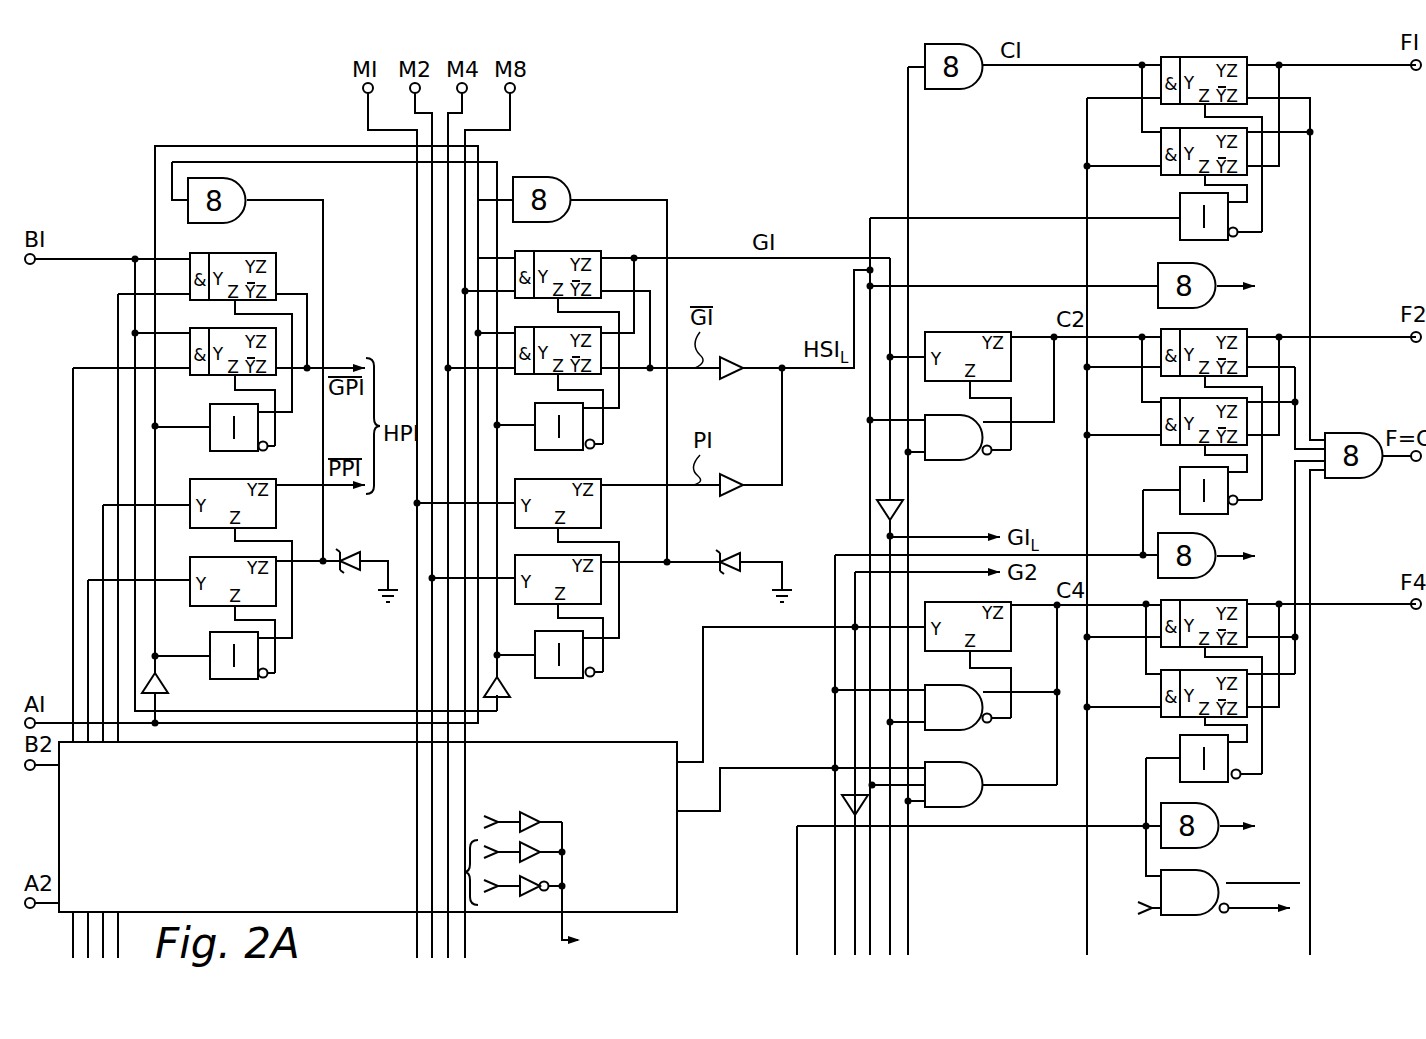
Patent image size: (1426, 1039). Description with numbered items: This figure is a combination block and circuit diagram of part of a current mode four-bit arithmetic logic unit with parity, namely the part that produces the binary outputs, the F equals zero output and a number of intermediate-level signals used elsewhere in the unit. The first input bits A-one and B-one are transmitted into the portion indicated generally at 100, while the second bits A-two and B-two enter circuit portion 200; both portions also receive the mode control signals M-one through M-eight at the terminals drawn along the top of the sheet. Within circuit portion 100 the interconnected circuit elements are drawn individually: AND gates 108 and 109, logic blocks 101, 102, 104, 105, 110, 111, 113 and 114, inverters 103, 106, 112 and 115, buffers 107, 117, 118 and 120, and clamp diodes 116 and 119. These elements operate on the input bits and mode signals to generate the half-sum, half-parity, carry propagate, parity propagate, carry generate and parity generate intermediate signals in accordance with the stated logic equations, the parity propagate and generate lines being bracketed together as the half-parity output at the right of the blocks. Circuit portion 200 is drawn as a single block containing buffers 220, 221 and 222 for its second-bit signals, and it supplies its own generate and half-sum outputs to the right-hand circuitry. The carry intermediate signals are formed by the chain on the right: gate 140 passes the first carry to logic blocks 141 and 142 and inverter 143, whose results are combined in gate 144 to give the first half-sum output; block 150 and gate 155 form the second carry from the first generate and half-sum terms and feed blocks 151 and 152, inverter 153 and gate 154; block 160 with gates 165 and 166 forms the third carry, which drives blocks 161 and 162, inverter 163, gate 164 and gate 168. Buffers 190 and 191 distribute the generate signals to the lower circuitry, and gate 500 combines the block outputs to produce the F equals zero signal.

The circuit portion 100 is at (180, 117).
The logic block 101 is at (205, 256).
The logic block 102 is at (208, 332).
The inverter 103 is at (212, 410).
The logic block 104 is at (210, 484).
The logic block 105 is at (210, 562).
The inverter 106 is at (212, 640).
The buffer 107 is at (162, 680).
The AND gate 108 is at (238, 196).
The AND gate 109 is at (550, 186).
The logic block 110 is at (542, 256).
The logic block 111 is at (538, 332).
The inverter 112 is at (538, 410).
The logic block 113 is at (540, 484).
The logic block 114 is at (540, 560).
The inverter 115 is at (538, 640).
The diode 116 is at (744, 572).
The buffer 117 is at (735, 494).
The buffer 118 is at (728, 350).
The diode 119 is at (347, 570).
The buffer 120 is at (508, 688).
The AND gate 140 is at (920, 62).
The logic block 141 is at (1186, 56).
The logic block 142 is at (1196, 130).
The inverter 143 is at (1182, 204).
The AND gate 144 is at (1175, 268).
The logic block 150 is at (958, 328).
The logic block 151 is at (1186, 328).
The logic block 152 is at (1196, 400).
The inverter 153 is at (1184, 474).
The AND gate 154 is at (1194, 538).
The NAND gate 155 is at (958, 412).
The logic block 160 is at (958, 602).
The logic block 161 is at (1186, 602).
The logic block 162 is at (1196, 672).
The inverter 163 is at (1184, 746).
The AND gate 164 is at (1196, 808).
The AND gate 165 is at (958, 684).
The AND gate 166 is at (958, 762).
The NAND gate 168 is at (1196, 874).
The buffer 190 is at (878, 508).
The buffer 191 is at (842, 810).
The circuit portion 200 is at (583, 742).
The buffer 220 is at (532, 814).
The buffer 221 is at (540, 852).
The inverting buffer 222 is at (542, 882).
The AND gate 500 is at (1372, 415).